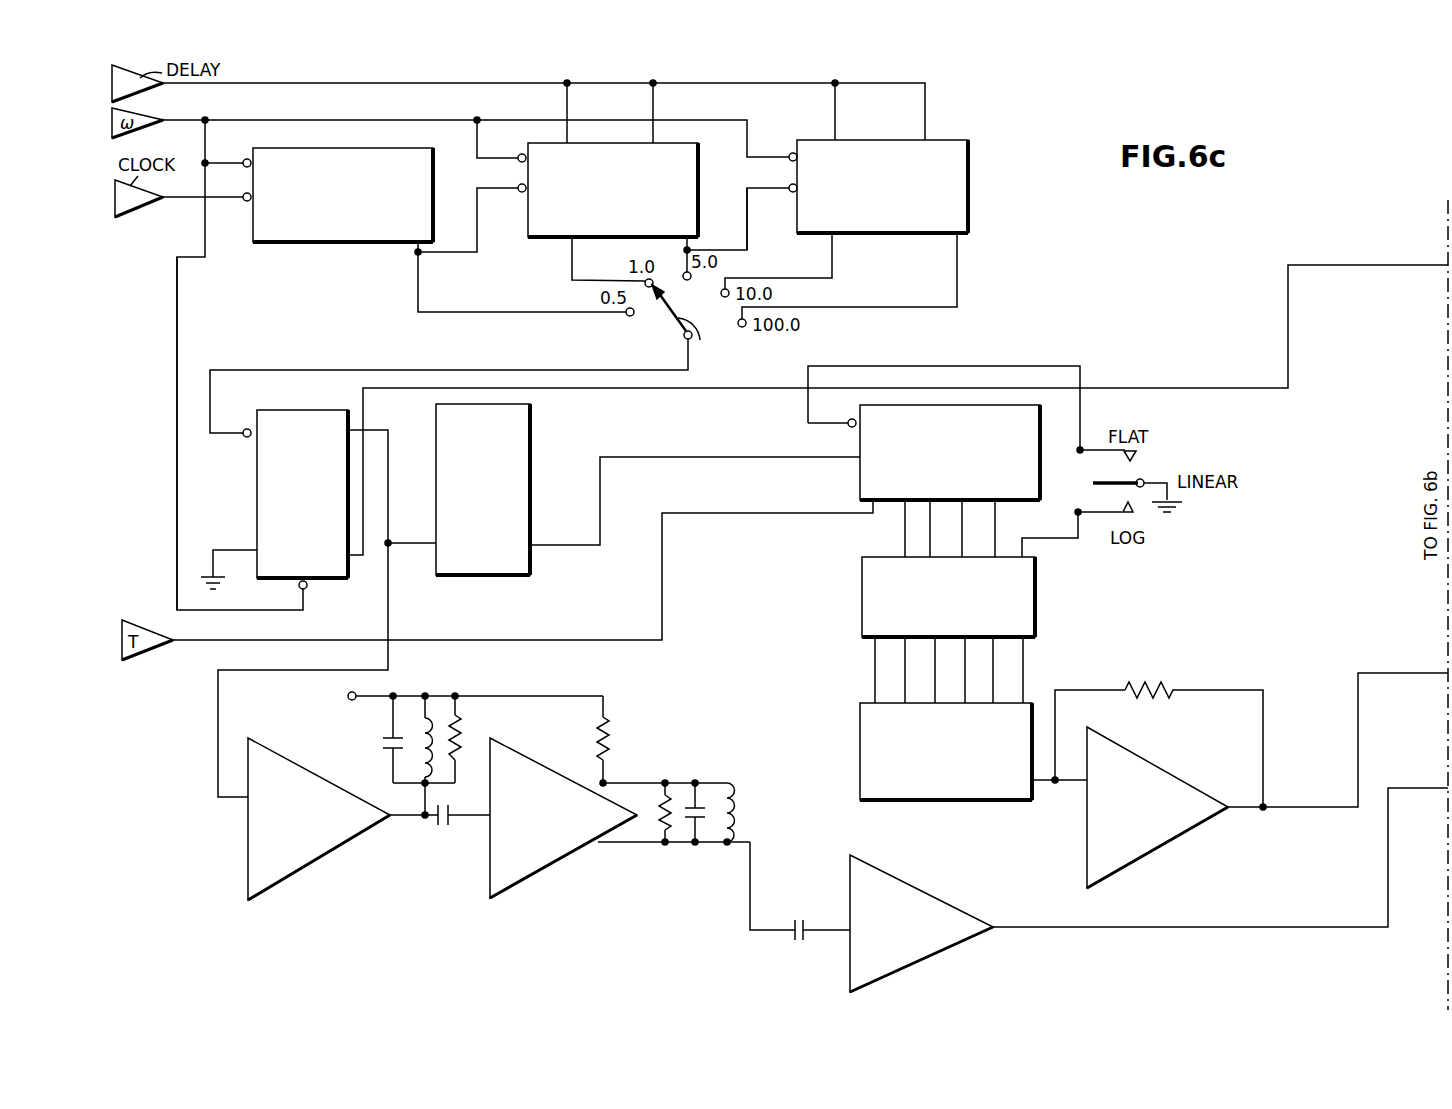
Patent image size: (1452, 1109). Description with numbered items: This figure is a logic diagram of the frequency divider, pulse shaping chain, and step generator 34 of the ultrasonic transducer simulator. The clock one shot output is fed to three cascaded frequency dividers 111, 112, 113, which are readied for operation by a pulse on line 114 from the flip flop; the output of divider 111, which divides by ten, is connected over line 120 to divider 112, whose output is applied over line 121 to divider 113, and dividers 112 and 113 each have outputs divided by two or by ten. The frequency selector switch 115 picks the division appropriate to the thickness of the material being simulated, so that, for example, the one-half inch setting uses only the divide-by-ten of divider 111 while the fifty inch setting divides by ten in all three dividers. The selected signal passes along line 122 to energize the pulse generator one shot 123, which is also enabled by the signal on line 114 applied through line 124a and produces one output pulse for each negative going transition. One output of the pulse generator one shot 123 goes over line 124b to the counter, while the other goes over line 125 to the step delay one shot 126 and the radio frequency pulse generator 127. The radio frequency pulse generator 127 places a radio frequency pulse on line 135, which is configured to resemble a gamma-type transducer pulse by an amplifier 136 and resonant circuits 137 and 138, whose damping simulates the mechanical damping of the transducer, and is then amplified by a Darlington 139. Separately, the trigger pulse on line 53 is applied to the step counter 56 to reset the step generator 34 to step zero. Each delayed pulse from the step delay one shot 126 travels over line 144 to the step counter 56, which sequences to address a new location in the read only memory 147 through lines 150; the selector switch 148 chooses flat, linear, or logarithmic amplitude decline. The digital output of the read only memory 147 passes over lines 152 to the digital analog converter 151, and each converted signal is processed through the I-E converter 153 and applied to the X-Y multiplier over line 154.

The step generator 34 is at (1028, 364).
The trigger pulse line 53 is at (581, 637).
The step counter 56 is at (860, 474).
The frequency divider 111 is at (426, 153).
The frequency divider 112 is at (692, 152).
The frequency divider 113 is at (966, 158).
The enable line 114 is at (308, 122).
The frequency selector switch 115 is at (697, 344).
The line 120 is at (460, 254).
The line 121 is at (748, 222).
The line 122 is at (444, 369).
The pulse generator one shot 123 is at (302, 410).
The line 124a is at (176, 400).
The line 124b is at (628, 390).
The line 125 is at (390, 465).
The step delay one shot 126 is at (530, 445).
The radio frequency pulse generator 127 is at (300, 766).
The line 135 is at (752, 868).
The amplifier 136 is at (534, 760).
The resonant circuit 137 is at (462, 728).
The resonant circuit 138 is at (740, 797).
The Darlington 139 is at (902, 885).
The line 144 is at (746, 455).
The read only memory 147 is at (862, 586).
The selector switch 148 is at (1094, 485).
The lines 150 is at (905, 534).
The digital analog converter 151 is at (860, 715).
The lines 152 is at (875, 668).
The I-E converter 153 is at (1172, 775).
The line 154 is at (1358, 710).